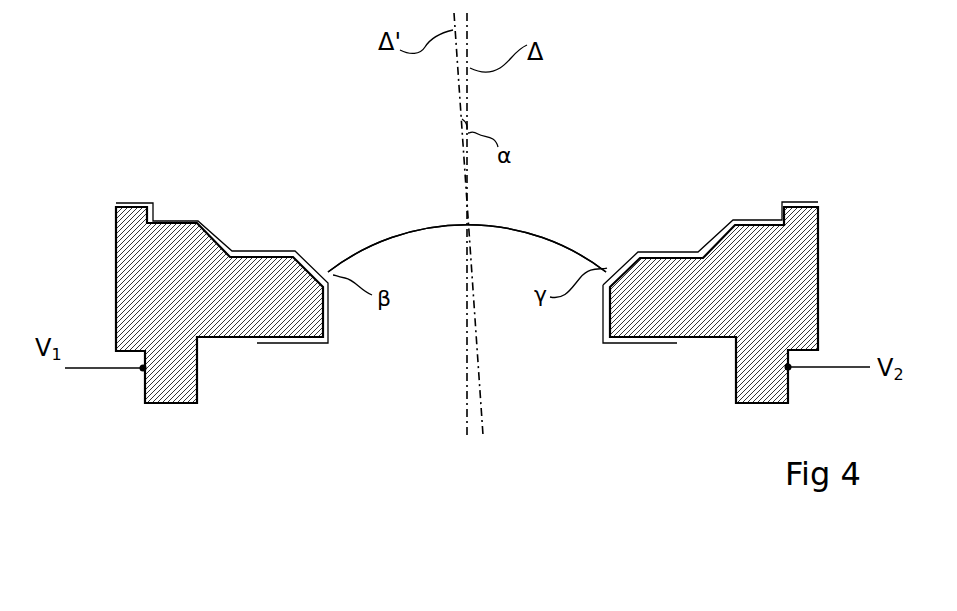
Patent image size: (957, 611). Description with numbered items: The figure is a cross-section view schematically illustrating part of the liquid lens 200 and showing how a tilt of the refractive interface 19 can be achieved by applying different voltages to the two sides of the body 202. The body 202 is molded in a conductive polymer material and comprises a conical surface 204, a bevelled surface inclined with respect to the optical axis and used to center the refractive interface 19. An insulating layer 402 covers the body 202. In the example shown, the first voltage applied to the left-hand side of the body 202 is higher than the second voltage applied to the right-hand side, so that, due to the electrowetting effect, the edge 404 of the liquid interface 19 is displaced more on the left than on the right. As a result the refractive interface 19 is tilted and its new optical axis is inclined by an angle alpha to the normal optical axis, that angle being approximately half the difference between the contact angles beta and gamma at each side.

The liquid lens 200 is at (736, 140).
The body 202 is at (652, 323).
The insulating layer 402 is at (253, 255).
The edge of the liquid interface 404 is at (615, 268).
The conical surface 204 is at (352, 262).
The refractive interface 19 is at (497, 222).